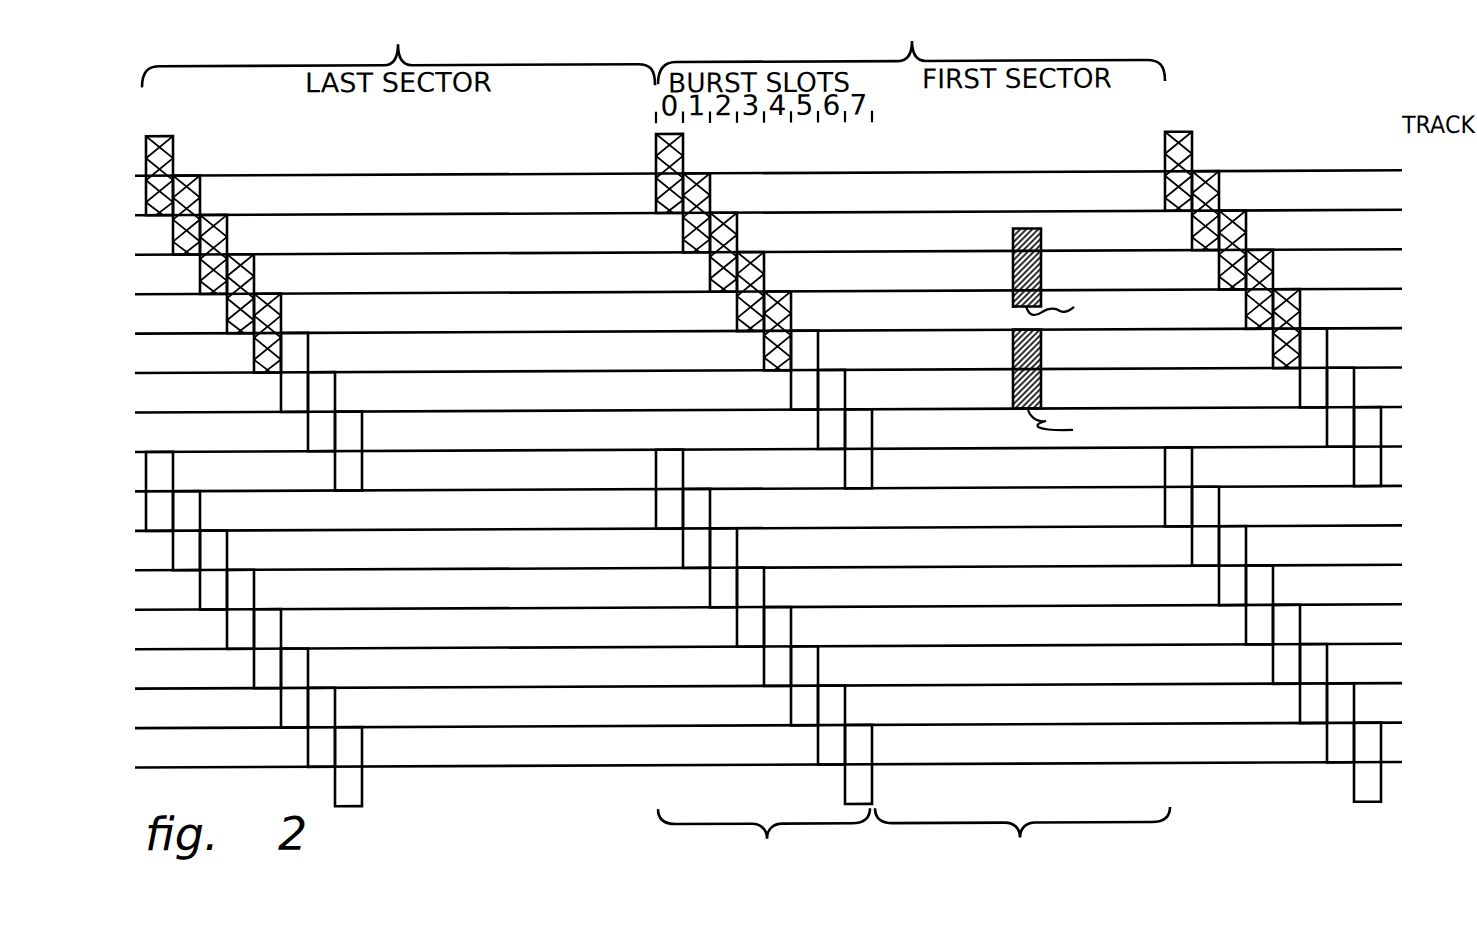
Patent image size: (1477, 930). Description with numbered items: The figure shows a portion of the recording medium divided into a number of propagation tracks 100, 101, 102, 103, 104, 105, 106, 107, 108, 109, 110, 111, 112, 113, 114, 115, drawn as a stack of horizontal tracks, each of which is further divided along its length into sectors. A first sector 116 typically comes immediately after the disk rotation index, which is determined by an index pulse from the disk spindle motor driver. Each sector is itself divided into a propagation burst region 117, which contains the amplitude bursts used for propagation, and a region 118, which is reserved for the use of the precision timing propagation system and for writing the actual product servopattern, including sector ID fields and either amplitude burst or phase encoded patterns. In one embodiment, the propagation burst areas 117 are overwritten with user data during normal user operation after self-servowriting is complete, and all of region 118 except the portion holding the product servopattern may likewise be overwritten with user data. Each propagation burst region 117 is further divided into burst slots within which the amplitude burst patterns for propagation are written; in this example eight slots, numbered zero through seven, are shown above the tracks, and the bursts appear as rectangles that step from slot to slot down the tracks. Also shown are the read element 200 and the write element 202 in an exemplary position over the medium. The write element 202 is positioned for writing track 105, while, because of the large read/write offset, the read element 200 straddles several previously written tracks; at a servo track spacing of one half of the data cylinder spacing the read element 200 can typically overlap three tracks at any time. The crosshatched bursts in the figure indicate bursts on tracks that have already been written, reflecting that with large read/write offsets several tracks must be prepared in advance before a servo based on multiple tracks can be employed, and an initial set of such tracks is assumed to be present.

The propagation track 100 is at (798, 168).
The propagation track 101 is at (798, 208).
The propagation track 102 is at (798, 247).
The propagation track 103 is at (798, 286).
The propagation track 104 is at (798, 326).
The propagation track 105 is at (798, 365).
The propagation track 106 is at (798, 405).
The propagation track 107 is at (798, 444).
The propagation track 108 is at (798, 484).
The propagation track 109 is at (798, 523).
The propagation track 110 is at (798, 563).
The propagation track 111 is at (798, 602).
The propagation track 112 is at (798, 641).
The propagation track 113 is at (798, 681).
The propagation track 114 is at (798, 720).
The propagation track 115 is at (798, 760).
The first sector 116 is at (911, 47).
The propagation burst region 117 is at (764, 502).
The reserved region 118 is at (1022, 839).
The read element 200 is at (1041, 272).
The write element 202 is at (1041, 390).